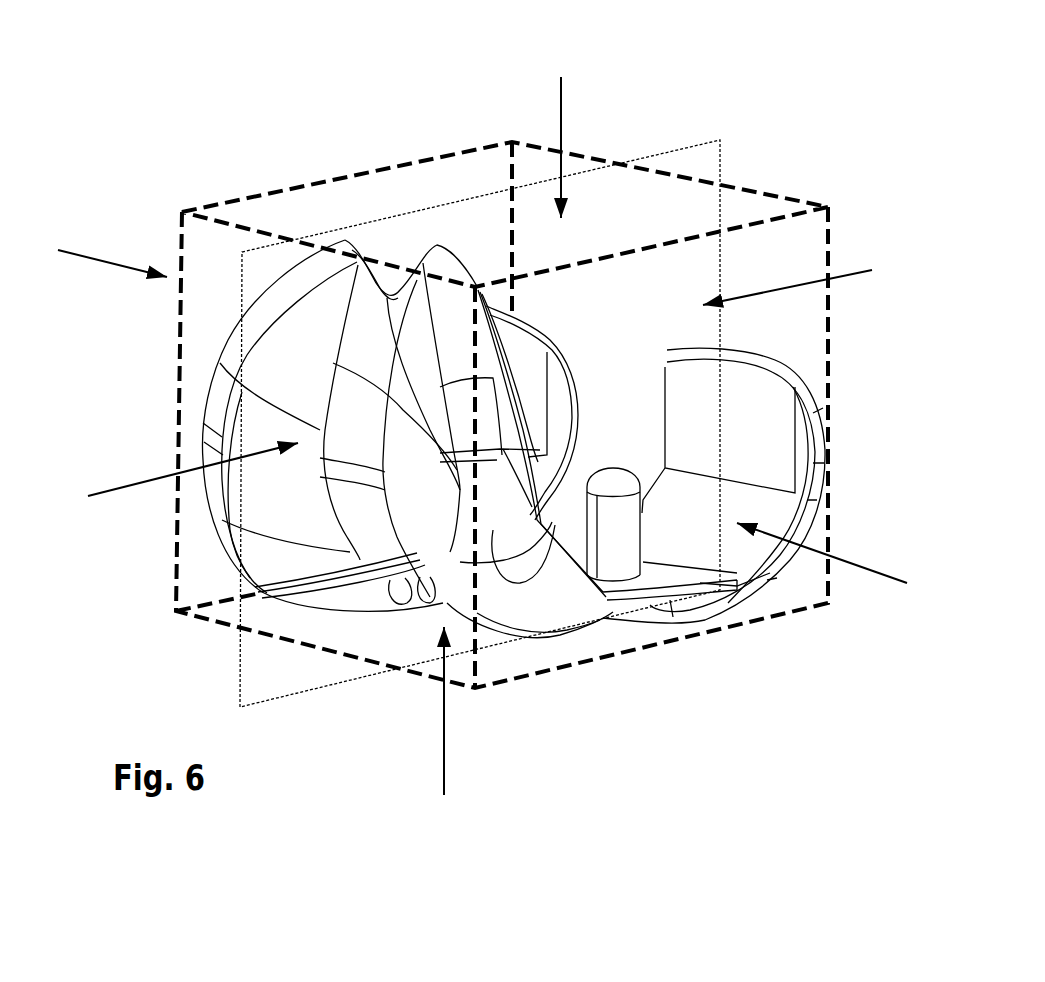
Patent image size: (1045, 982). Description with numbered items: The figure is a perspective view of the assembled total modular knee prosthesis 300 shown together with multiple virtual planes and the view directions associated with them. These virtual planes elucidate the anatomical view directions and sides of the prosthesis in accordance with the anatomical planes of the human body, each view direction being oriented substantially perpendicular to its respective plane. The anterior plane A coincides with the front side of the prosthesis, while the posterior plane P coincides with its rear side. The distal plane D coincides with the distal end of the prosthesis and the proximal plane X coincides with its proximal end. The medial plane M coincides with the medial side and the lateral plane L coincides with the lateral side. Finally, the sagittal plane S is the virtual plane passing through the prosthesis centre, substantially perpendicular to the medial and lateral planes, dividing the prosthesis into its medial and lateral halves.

The assembled total modular knee prosthesis 300 is at (315, 138).
The sagittal plane S is at (667, 152).
The proximal plane X is at (580, 139).
The medial plane M is at (91, 254).
The posterior plane P is at (803, 279).
The anterior plane A is at (171, 482).
The lateral plane L is at (836, 565).
The distal plane D is at (448, 732).